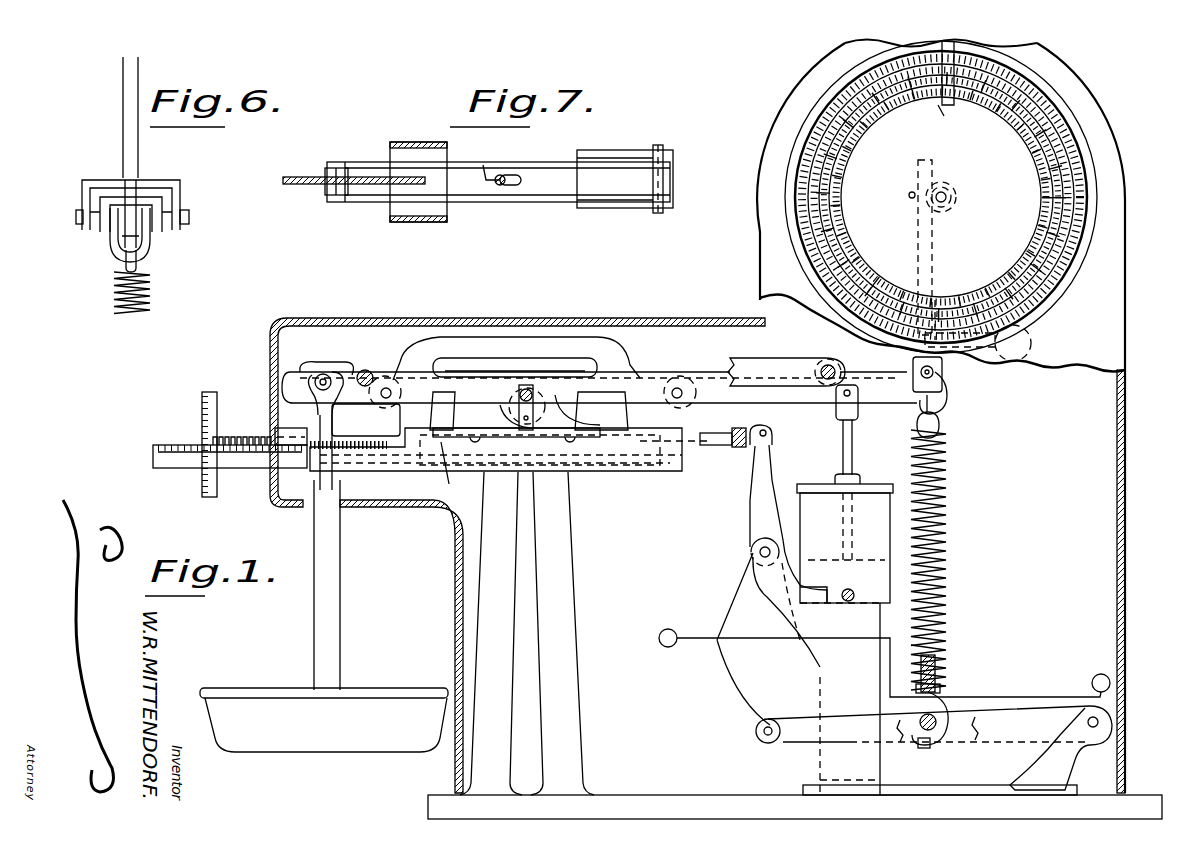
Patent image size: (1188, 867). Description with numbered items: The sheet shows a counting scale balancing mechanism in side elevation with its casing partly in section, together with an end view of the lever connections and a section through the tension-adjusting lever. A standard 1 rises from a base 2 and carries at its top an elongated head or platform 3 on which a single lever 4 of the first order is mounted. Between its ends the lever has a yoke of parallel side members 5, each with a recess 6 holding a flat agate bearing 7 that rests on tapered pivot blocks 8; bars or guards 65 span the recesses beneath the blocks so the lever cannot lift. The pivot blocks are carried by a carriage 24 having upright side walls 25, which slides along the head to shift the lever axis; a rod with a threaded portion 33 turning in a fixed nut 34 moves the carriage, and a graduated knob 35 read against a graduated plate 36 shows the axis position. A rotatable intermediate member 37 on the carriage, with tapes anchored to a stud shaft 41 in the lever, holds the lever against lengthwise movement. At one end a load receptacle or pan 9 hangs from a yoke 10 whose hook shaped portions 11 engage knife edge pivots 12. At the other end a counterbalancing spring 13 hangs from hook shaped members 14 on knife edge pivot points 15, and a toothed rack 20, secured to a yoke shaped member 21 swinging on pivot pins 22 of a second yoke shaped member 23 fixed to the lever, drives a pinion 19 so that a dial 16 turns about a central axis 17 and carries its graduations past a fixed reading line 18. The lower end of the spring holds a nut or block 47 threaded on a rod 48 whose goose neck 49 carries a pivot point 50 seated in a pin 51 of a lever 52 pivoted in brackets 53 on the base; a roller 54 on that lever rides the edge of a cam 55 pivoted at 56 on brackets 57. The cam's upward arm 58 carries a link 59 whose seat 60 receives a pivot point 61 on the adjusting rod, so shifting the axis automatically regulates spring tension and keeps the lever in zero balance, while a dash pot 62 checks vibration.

In FIG. 1, the standard 1 is at (570, 611).
In FIG. 1, the base 2 is at (640, 795).
In FIG. 1, the head or platform 3 is at (612, 472).
In FIG. 6, the lever 4 is at (150, 247).
In FIG. 1, the lever 4 is at (710, 372).
In FIG. 1, the side members 5 is at (566, 337).
In FIG. 1, the recess 6 is at (595, 395).
In FIG. 1, the bearing 7 is at (770, 535).
In FIG. 1, the pivot blocks 8 is at (520, 393).
In FIG. 1, the load receptacle or pan 9 is at (362, 690).
In FIG. 1, the yoke 10 is at (318, 406).
In FIG. 1, the hook shaped portions 11 is at (335, 378).
In FIG. 1, the knife edge pivots 12 is at (322, 374).
In FIG. 6, the spring 13 is at (152, 303).
In FIG. 1, the spring 13 is at (944, 438).
In FIG. 6, the hook shaped members 14 is at (118, 262).
In FIG. 1, the hook shaped members 14 is at (940, 405).
In FIG. 6, the knife edge pivot points 15 is at (108, 230).
In FIG. 1, the knife edge pivot points 15 is at (912, 385).
In FIG. 1, the dial 16 is at (941, 197).
In FIG. 1, the central axis 17 is at (952, 194).
In FIG. 1, the reading line or wire 18 is at (933, 110).
In FIG. 1, the pinion 19 is at (955, 205).
In FIG. 6, the toothed rack 20 is at (123, 122).
In FIG. 1, the toothed rack 20 is at (933, 254).
In FIG. 6, the yoke shaped member 21 is at (162, 180).
In FIG. 6, the pivot pins 22 is at (189, 214).
In FIG. 6, the second yoke shaped member 23 is at (176, 200).
In FIG. 1, the carriage 24 is at (588, 418).
In FIG. 1, the side walls 25 is at (505, 405).
In FIG. 1, the threaded portion 33 is at (350, 437).
In FIG. 1, the fixed nut 34 is at (286, 428).
In FIG. 1, the knob 35 is at (217, 416).
In FIG. 1, the plate 36 is at (178, 468).
In FIG. 1, the intermediate member 37 is at (577, 401).
In FIG. 1, the stud shaft 41 is at (684, 395).
In FIG. 1, the nut or block 47 is at (945, 690).
In FIG. 7, the rod 48 is at (500, 187).
In FIG. 1, the rod 48 is at (945, 648).
In FIG. 7, the goose neck 49 is at (515, 177).
In FIG. 1, the goose neck 49 is at (948, 740).
In FIG. 1, the pivot point 50 is at (928, 748).
In FIG. 7, the pin 51 is at (497, 175).
In FIG. 1, the pin 51 is at (922, 728).
In FIG. 7, the lever 52 is at (498, 193).
In FIG. 1, the lever 52 is at (1000, 738).
In FIG. 7, the brackets 53 is at (612, 150).
In FIG. 1, the brackets 53 is at (1045, 742).
In FIG. 7, the roller 54 is at (330, 196).
In FIG. 1, the roller 54 is at (766, 743).
In FIG. 7, the cam 55 is at (310, 184).
In FIG. 1, the cam 55 is at (750, 695).
In FIG. 1, the pivot 56 is at (755, 563).
In FIG. 7, the brackets 57 is at (435, 222).
In FIG. 1, the brackets 57 is at (938, 699).
In FIG. 1, the arm 58 is at (752, 507).
In FIG. 1, the link 59 is at (766, 428).
In FIG. 1, the seat 60 is at (738, 448).
In FIG. 1, the pivot point 61 is at (726, 445).
In FIG. 1, the dash pot 62 is at (813, 505).
In FIG. 1, the bars or guards 65 is at (455, 470).